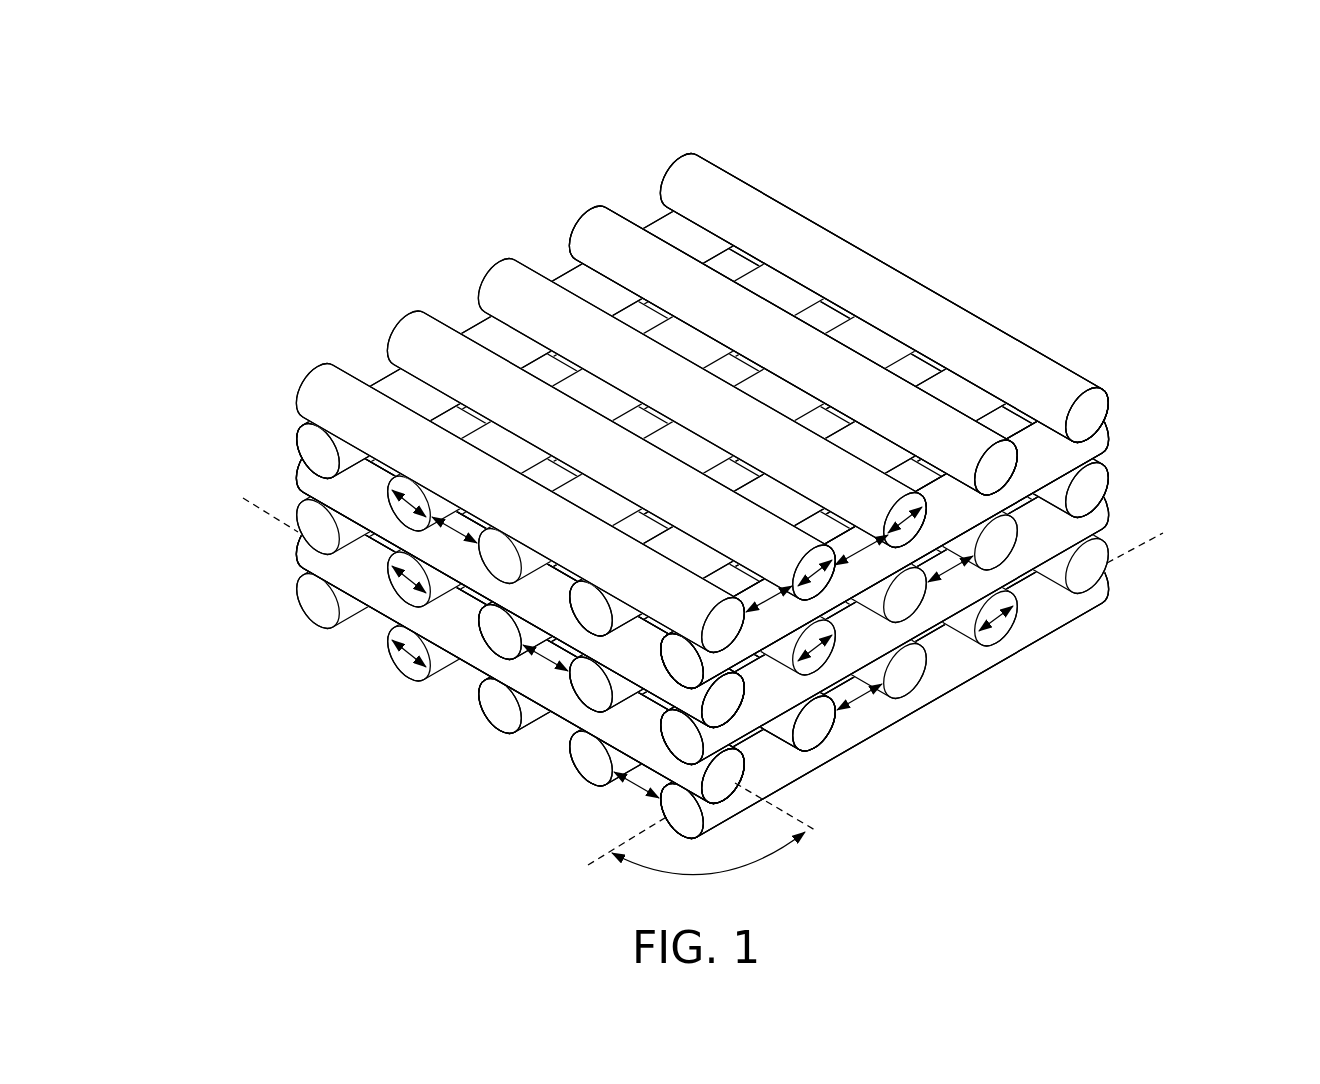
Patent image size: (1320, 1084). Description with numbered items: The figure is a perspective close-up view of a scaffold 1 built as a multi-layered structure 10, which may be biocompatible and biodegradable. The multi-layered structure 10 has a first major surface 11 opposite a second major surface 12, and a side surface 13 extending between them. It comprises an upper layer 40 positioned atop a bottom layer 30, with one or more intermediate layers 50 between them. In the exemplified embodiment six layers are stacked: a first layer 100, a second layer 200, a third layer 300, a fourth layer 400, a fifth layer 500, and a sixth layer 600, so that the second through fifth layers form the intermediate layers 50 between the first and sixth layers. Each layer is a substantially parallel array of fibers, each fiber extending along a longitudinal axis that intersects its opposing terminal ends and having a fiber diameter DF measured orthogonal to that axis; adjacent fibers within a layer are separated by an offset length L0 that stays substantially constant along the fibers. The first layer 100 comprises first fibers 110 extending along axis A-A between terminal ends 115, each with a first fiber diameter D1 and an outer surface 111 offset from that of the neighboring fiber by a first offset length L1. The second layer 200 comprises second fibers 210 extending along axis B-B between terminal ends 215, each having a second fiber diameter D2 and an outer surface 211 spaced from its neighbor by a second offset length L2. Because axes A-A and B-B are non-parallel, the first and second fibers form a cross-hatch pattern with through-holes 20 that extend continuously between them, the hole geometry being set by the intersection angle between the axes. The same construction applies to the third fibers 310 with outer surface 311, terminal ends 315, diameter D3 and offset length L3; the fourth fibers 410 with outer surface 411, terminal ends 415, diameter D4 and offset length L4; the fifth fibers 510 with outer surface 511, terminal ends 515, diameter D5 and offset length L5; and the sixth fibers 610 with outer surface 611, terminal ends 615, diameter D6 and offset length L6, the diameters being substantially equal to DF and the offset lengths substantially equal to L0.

The scaffold 1 is at (700, 485).
The multi-layered structure 10 is at (1174, 553).
The first major surface 11 is at (787, 238).
The second major surface 12 is at (481, 737).
The side surface 13 is at (1110, 480).
The through-holes 20 is at (723, 263).
The bottom layer 30 is at (805, 768).
The upper layer 40 is at (1045, 385).
The intermediate layers 50 is at (357, 548).
The first layer 100 is at (729, 634).
The first fibers 110 is at (1026, 638).
The outer surface 111 is at (1000, 650).
The terminal ends 115 is at (672, 803).
The second layer 200 is at (617, 612).
The second fibers 210 is at (705, 768).
The outer surface 211 is at (585, 628).
The terminal ends 215 is at (295, 550).
The third layer 300 is at (689, 549).
The third fibers 310 is at (1000, 655).
The outer surface 311 is at (898, 622).
The terminal ends 315 is at (1113, 507).
The fourth layer 400 is at (715, 498).
The fourth fibers 410 is at (488, 580).
The outer surface 411 is at (462, 565).
The terminal ends 415 is at (295, 465).
The fifth layer 500 is at (686, 408).
The fifth fibers 510 is at (390, 386).
The outer surface 511 is at (1031, 455).
The terminal ends 515 is at (640, 622).
The sixth layer 600 is at (724, 391).
The sixth fibers 610 is at (594, 234).
The outer surface 611 is at (616, 242).
The terminal ends 615 is at (568, 238).
The first fiber diameter D1 is at (403, 667).
The second fiber diameter D2 is at (1000, 628).
The third fiber diameter D3 is at (390, 632).
The fourth fiber diameter D4 is at (820, 667).
The fifth fiber diameter D5 is at (414, 492).
The sixth fiber diameter D6 is at (810, 573).
The fiber diameter DF is at (897, 515).
The offset length L0 is at (861, 522).
The first offset length L1 is at (539, 839).
The second offset length L2 is at (860, 708).
The third offset length L3 is at (545, 628).
The fourth offset length L4 is at (953, 531).
The fifth offset length L5 is at (467, 513).
The sixth offset length L6 is at (745, 610).